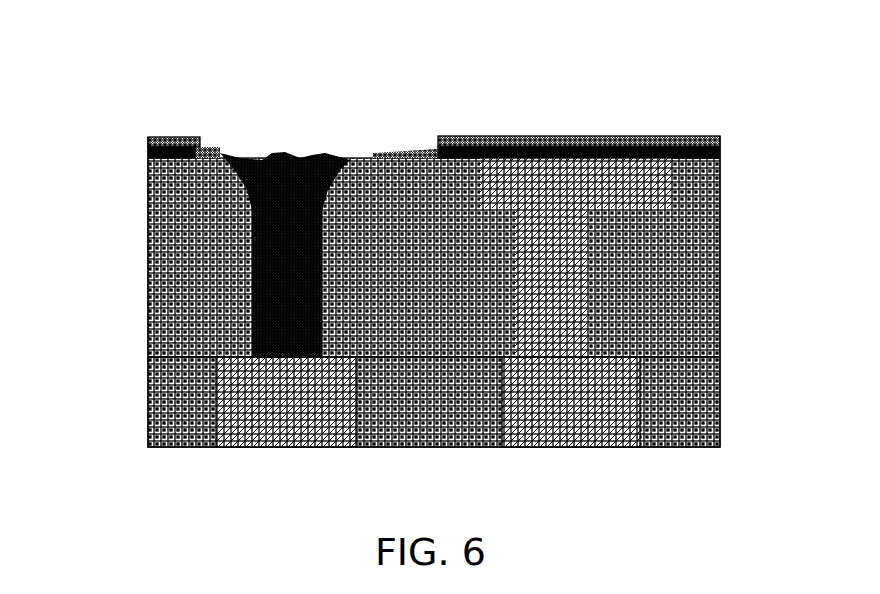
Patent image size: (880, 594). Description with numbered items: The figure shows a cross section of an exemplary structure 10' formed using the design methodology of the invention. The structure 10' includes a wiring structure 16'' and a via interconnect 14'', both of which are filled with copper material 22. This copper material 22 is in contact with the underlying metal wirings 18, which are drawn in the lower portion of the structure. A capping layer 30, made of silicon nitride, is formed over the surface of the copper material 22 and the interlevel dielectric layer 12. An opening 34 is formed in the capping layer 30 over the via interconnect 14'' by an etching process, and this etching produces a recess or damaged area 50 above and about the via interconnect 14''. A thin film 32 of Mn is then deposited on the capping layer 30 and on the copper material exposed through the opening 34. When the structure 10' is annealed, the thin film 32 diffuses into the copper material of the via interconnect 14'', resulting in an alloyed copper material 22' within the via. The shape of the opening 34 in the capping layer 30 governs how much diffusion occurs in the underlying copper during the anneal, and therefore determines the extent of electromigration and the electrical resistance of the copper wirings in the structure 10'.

The structure 10' is at (385, 232).
The interlevel dielectric layer 12 is at (152, 342).
The via interconnect 14'' is at (382, 257).
The wiring structure 16'' is at (664, 282).
The underlying metal wirings 18 is at (525, 420).
The copper material 22 is at (632, 257).
The alloyed copper material 22' is at (199, 274).
The capping layer 30 is at (148, 146).
The thin film 32 is at (524, 136).
The opening 34 is at (326, 152).
The recess or damaged area 50 is at (265, 152).